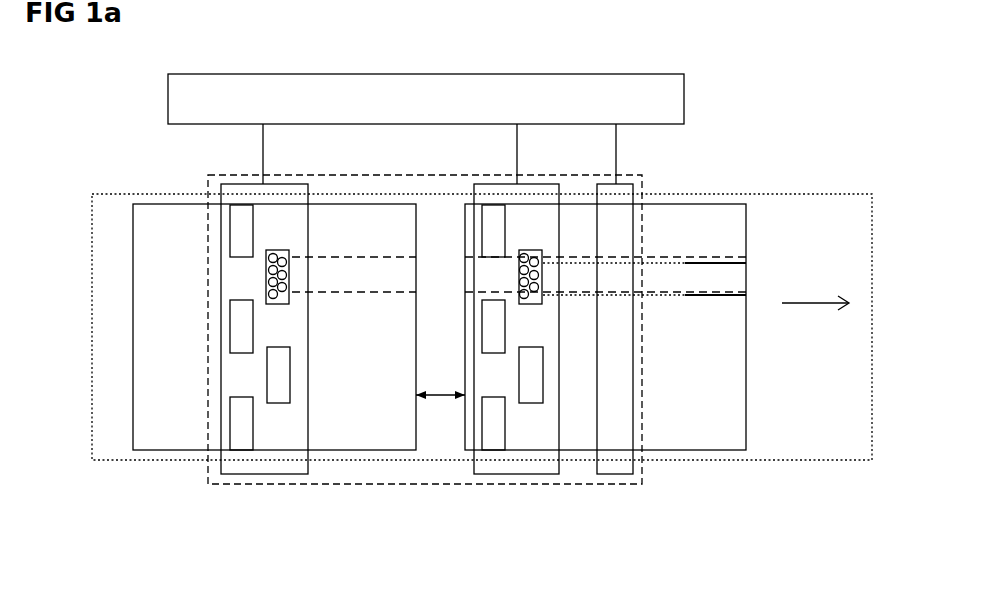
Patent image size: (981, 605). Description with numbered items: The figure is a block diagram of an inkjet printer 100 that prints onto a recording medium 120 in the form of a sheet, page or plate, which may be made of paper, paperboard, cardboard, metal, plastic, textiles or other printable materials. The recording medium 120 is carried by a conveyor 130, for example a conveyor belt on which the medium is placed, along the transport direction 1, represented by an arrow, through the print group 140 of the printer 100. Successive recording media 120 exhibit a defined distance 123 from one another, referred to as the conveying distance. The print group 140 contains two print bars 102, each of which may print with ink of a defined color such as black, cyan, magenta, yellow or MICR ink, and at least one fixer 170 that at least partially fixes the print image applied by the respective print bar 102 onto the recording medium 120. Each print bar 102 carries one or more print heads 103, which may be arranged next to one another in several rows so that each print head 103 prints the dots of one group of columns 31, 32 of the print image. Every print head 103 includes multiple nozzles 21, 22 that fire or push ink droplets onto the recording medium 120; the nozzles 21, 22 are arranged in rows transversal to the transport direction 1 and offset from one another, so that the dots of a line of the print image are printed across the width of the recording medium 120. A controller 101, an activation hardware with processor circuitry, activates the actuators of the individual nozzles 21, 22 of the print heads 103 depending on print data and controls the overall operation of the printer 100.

The transport direction 1 is at (810, 305).
The nozzle 21 is at (283, 258).
The nozzle 22 is at (292, 292).
The column 31 is at (375, 257).
The column 32 is at (355, 296).
The printer 100 is at (126, 95).
The controller 101 is at (685, 93).
The print bar 102 is at (293, 184).
The print head 103 is at (240, 212).
The recording medium 120 is at (142, 192).
The distance 123 is at (440, 400).
The conveyor 130 is at (830, 184).
The print group 140 is at (470, 175).
The fixer 170 is at (630, 184).